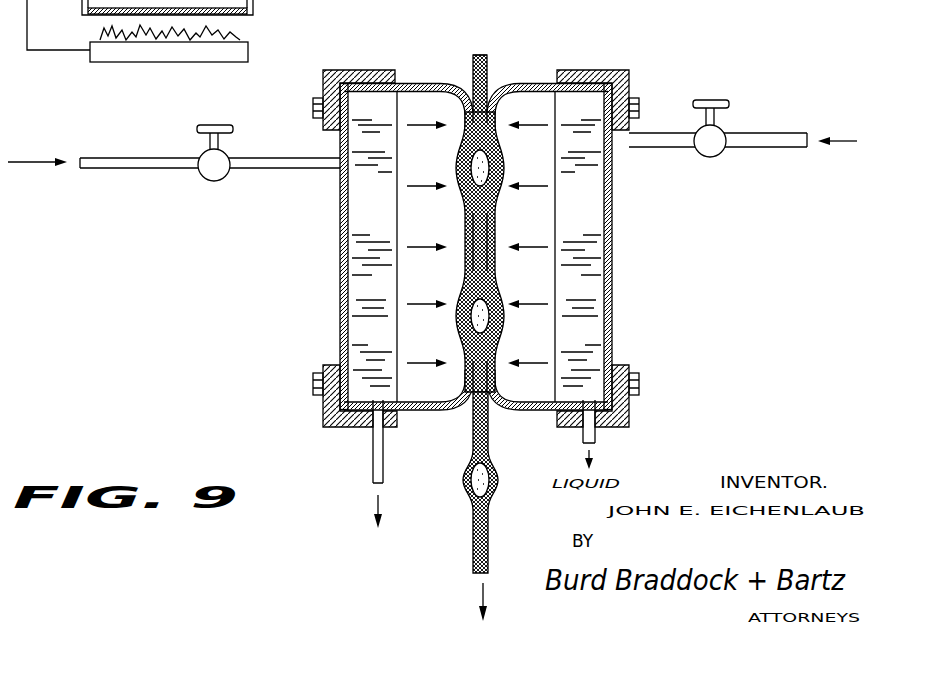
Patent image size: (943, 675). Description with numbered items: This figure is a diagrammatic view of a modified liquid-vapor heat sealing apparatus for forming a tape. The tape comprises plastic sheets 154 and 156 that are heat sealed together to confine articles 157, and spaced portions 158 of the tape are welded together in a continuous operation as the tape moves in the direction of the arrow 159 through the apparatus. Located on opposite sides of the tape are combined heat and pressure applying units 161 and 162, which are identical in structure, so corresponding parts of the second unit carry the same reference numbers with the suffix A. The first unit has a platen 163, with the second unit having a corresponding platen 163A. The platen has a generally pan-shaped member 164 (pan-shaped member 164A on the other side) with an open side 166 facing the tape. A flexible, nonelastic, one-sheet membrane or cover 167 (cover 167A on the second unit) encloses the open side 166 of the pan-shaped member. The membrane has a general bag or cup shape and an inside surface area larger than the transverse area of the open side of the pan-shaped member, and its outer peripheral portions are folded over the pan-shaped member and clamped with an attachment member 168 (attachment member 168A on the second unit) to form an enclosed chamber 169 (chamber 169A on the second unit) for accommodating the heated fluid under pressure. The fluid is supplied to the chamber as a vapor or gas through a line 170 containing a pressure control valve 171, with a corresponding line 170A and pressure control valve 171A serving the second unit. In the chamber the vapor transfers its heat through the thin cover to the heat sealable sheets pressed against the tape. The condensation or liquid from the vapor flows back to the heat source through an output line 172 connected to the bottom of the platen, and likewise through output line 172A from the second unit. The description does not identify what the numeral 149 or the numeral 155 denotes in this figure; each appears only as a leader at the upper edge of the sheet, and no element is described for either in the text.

The heater lead 149 is at (250, 42).
The plastic sheet 154 is at (473, 68).
The tube end 155 is at (490, 52).
The plastic sheet 156 is at (490, 92).
The article 157 is at (470, 490).
The spaced portion 158 is at (473, 428).
The arrow 159 is at (481, 592).
The combined heat and pressure applying unit 161 is at (364, 64).
The combined heat and pressure applying unit 162 is at (640, 68).
The platen 163 is at (333, 256).
The platen 163A is at (620, 255).
The pan-shaped member 164 is at (352, 277).
The pan-shaped member 164A is at (600, 288).
The open side 166 is at (355, 307).
The membrane or cover 167 is at (431, 83).
The membrane or cover 167A is at (527, 83).
The attachment member 168 is at (322, 421).
The attachment member 168A is at (630, 410).
The chamber 169 is at (403, 206).
The chamber 169A is at (540, 212).
The line 170 is at (142, 168).
The line 170A is at (777, 148).
The pressure control valve 171 is at (218, 183).
The pressure control valve 171A is at (722, 128).
The output line 172 is at (372, 470).
The output line 172A is at (595, 433).